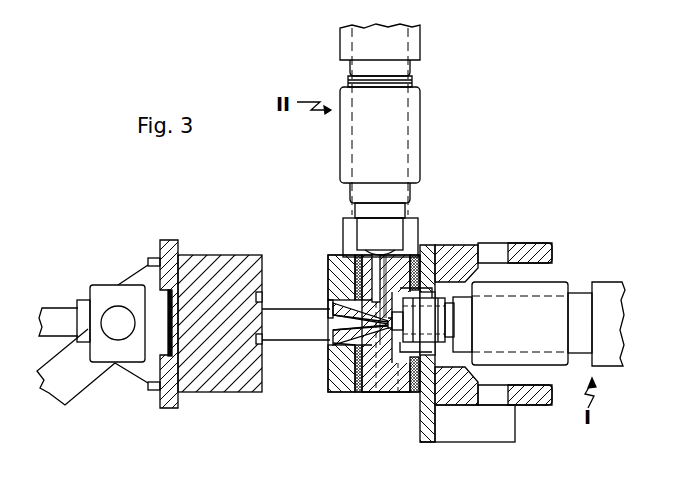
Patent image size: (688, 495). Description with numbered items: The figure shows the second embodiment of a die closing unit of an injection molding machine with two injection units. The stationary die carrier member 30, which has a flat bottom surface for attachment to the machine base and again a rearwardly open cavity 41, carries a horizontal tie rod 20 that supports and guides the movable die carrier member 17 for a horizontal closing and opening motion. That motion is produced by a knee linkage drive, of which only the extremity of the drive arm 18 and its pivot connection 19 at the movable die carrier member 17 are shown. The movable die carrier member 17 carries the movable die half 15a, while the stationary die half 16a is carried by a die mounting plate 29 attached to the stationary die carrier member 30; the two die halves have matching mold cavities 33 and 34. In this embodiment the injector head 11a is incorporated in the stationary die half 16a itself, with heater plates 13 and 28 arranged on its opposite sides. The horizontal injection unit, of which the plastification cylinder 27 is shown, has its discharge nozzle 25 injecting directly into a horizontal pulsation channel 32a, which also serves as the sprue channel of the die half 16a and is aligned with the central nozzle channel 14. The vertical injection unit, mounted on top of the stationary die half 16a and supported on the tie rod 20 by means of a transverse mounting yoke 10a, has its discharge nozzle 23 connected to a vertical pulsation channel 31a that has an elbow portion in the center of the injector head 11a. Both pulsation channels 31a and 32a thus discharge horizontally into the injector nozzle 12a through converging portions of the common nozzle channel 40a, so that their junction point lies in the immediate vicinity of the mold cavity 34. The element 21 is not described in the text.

The transverse mounting yoke 10a is at (412, 226).
The injector head 11a is at (378, 372).
The injector nozzle 12a is at (352, 345).
The heater plate 13 is at (380, 350).
The central nozzle channel 14 is at (398, 372).
The movable die half 15a is at (235, 388).
The stationary die half 16a is at (358, 360).
The movable die carrier member 17 is at (160, 370).
The drive arm 18 is at (82, 378).
The pivot connection 19 is at (113, 318).
The tie rod 20 is at (58, 320).
The valve 21 is at (396, 86).
The discharge nozzle 23 is at (386, 238).
The discharge nozzle 25 is at (470, 250).
The plastification cylinder 27 is at (575, 300).
The heater plate 28 is at (427, 400).
The die mounting plate 29 is at (430, 440).
The stationary die carrier member 30 is at (496, 420).
The vertical pulsation channel 31a is at (338, 272).
The horizontal pulsation channel 32a is at (368, 400).
The mold cavity 33 is at (262, 292).
The mold cavity 34 is at (340, 340).
The common nozzle channel 40a is at (342, 312).
The rearwardly open cavity 41 is at (518, 272).